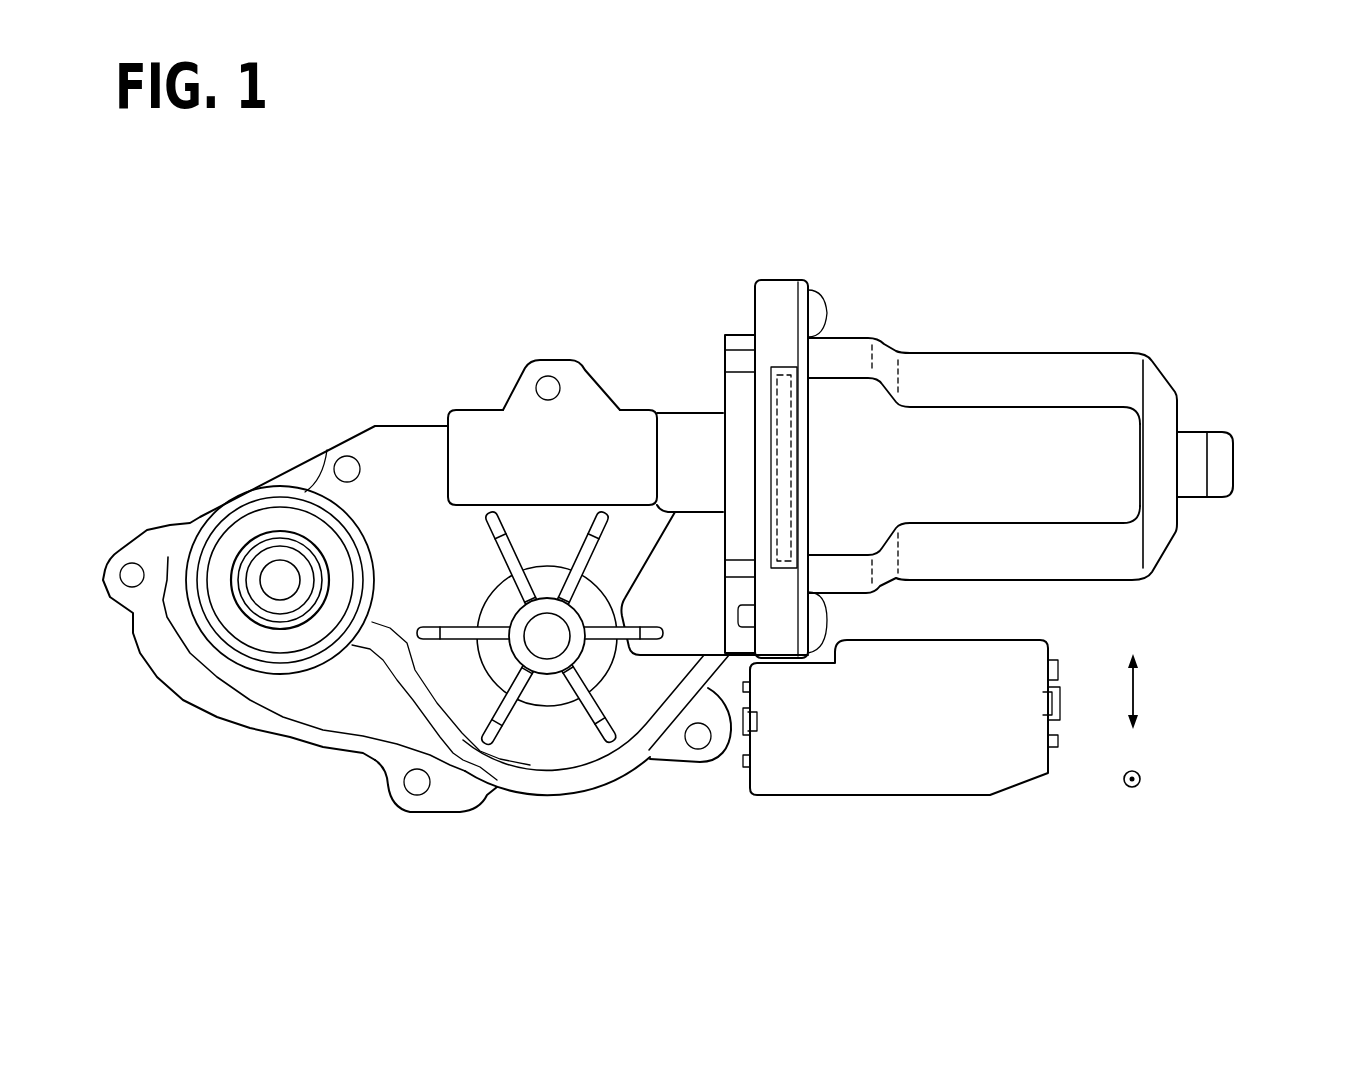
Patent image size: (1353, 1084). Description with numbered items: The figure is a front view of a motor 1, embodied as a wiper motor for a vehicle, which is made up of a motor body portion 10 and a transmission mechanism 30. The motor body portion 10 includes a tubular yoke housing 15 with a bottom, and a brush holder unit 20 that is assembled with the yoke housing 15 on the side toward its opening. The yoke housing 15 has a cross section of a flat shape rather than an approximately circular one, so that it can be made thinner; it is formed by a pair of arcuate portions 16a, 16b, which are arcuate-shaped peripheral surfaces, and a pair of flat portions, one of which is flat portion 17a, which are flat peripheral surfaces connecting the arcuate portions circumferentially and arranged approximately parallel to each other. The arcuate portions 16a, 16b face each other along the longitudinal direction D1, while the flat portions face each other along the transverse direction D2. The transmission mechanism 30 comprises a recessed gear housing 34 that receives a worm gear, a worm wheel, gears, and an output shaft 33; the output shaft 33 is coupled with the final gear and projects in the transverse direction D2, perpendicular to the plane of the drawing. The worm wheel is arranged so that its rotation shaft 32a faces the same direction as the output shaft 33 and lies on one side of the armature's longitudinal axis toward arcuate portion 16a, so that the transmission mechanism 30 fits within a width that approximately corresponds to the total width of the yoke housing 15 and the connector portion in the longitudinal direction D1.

The motor 1 is at (338, 272).
The motor body portion 10 is at (936, 326).
The yoke housing 15 is at (980, 372).
The arcuate portion 16a is at (1117, 558).
The arcuate portion 16b is at (1110, 373).
The flat portion 17a is at (1110, 448).
The brush holder unit 20 is at (767, 797).
The transmission mechanism 30 is at (557, 328).
The rotation shaft 32a is at (540, 638).
The output shaft 33 is at (272, 563).
The gear housing 34 is at (550, 747).
The longitudinal direction D1 is at (1161, 692).
The transverse direction D2 is at (1159, 781).